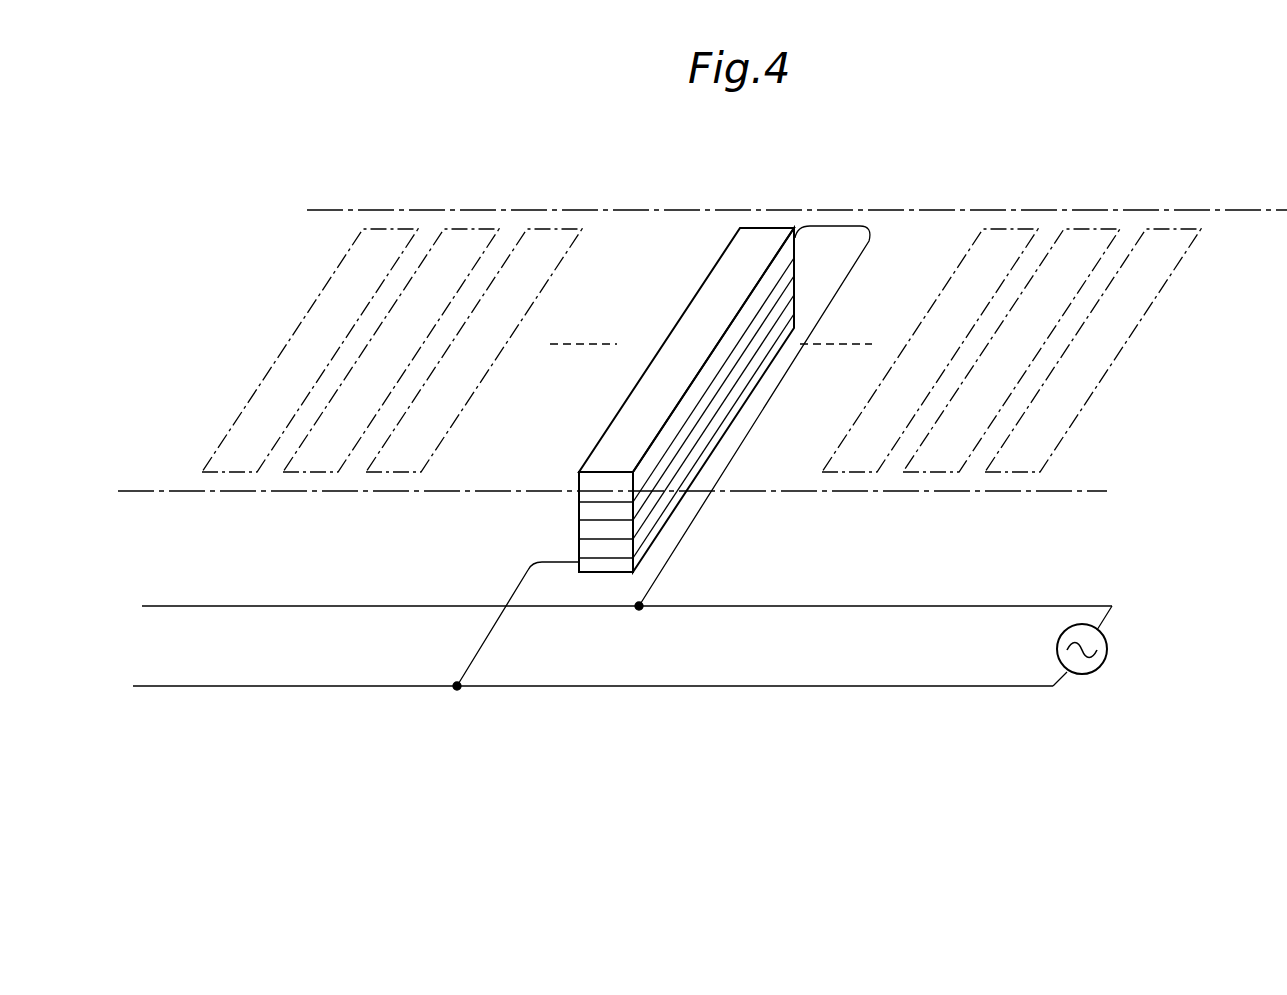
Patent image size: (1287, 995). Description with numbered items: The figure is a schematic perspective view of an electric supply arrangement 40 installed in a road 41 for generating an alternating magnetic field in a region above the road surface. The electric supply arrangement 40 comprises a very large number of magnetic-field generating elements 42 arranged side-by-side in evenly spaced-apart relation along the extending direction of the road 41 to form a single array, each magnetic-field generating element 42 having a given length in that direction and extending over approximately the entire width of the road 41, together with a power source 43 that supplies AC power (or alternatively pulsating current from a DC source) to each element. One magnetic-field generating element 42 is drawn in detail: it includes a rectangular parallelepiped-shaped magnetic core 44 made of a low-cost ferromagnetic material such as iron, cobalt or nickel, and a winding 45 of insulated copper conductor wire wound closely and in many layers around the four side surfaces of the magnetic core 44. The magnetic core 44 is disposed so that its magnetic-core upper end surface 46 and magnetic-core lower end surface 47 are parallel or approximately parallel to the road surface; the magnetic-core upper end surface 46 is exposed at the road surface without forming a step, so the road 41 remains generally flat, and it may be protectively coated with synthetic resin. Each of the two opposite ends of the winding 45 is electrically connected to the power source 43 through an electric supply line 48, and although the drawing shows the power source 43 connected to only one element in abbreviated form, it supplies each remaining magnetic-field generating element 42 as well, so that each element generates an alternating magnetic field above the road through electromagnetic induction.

The electric supply arrangement 40 is at (896, 256).
The road 41 is at (623, 227).
The magnetic-field generating element 42 is at (383, 244).
The power source 43 is at (1108, 639).
The magnetic core 44 is at (608, 451).
The winding 45 is at (593, 521).
The magnetic-core upper end surface 46 is at (695, 333).
The magnetic-core lower end surface 47 is at (612, 572).
The electric supply line 48 is at (832, 605).